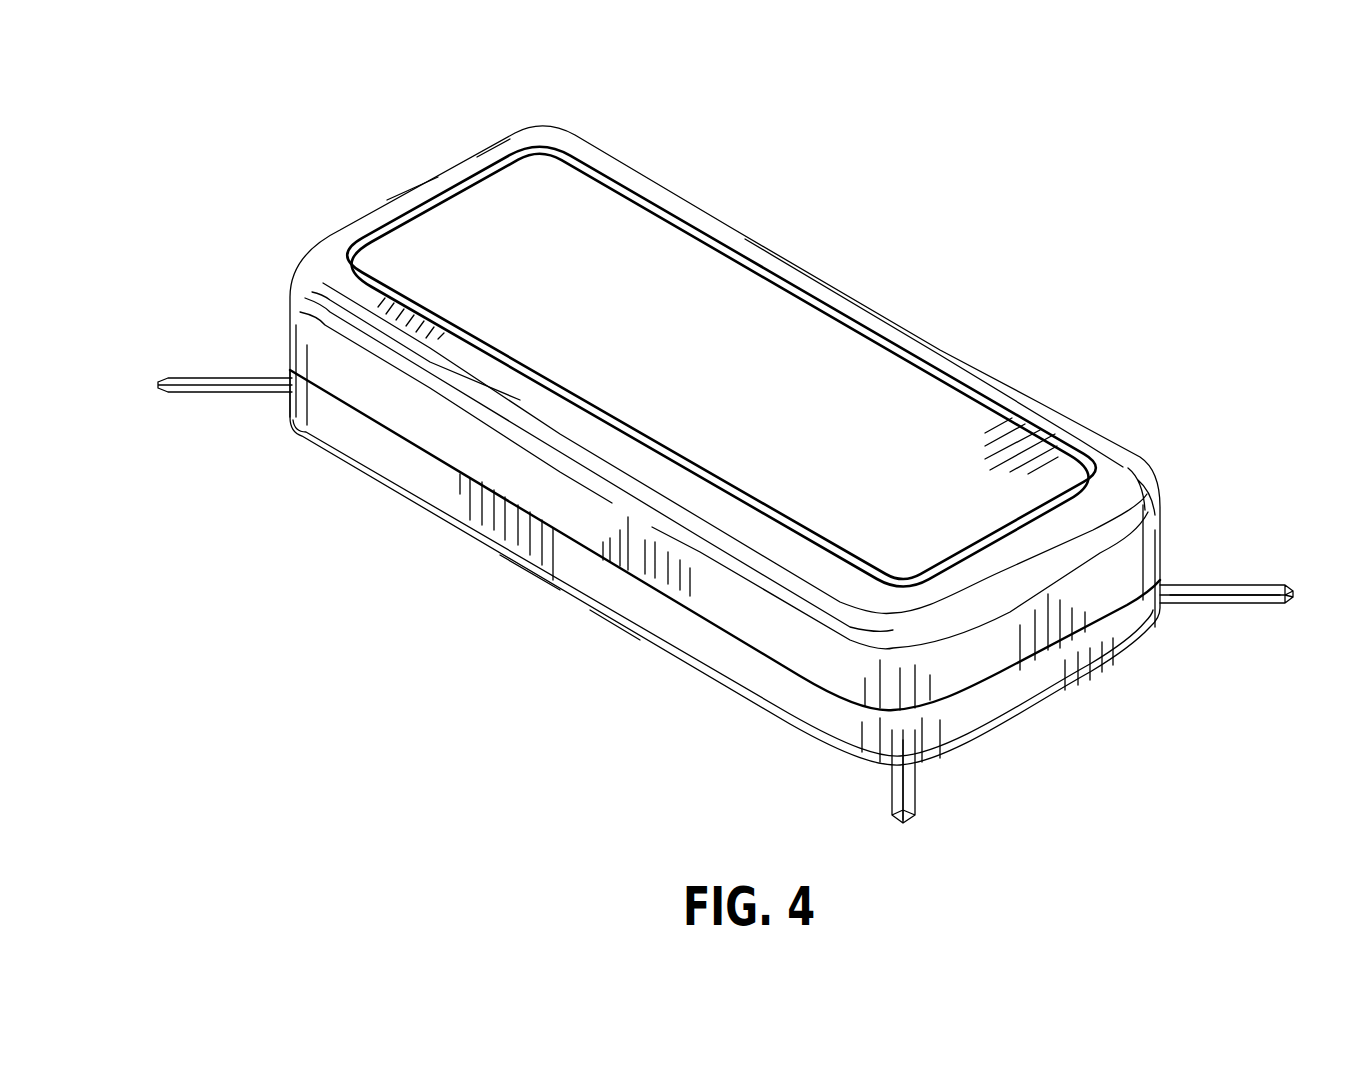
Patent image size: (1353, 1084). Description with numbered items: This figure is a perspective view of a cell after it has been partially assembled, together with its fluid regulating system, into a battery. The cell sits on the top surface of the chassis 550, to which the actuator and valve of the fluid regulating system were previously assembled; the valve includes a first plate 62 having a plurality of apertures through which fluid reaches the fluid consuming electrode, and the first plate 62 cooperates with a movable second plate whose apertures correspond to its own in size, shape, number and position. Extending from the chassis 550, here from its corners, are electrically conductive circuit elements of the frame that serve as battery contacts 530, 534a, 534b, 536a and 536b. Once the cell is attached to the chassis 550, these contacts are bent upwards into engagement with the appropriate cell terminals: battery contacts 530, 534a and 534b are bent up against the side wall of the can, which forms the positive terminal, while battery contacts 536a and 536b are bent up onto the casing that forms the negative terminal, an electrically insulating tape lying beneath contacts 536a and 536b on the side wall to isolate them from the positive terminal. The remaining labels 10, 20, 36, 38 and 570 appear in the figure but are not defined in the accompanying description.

The electronic device 10 is at (1084, 312).
The upper housing 20 is at (1088, 434).
The recess 36 is at (650, 235).
The recess wall 38 is at (898, 350).
The first plate 62 is at (530, 572).
The battery contact 530 is at (213, 383).
The battery contact 534a is at (1230, 585).
The battery contact 534b is at (1218, 603).
The battery contact 536a is at (895, 793).
The battery contact 536b is at (915, 805).
The chassis 550 is at (1040, 680).
The parting line 570 is at (618, 577).